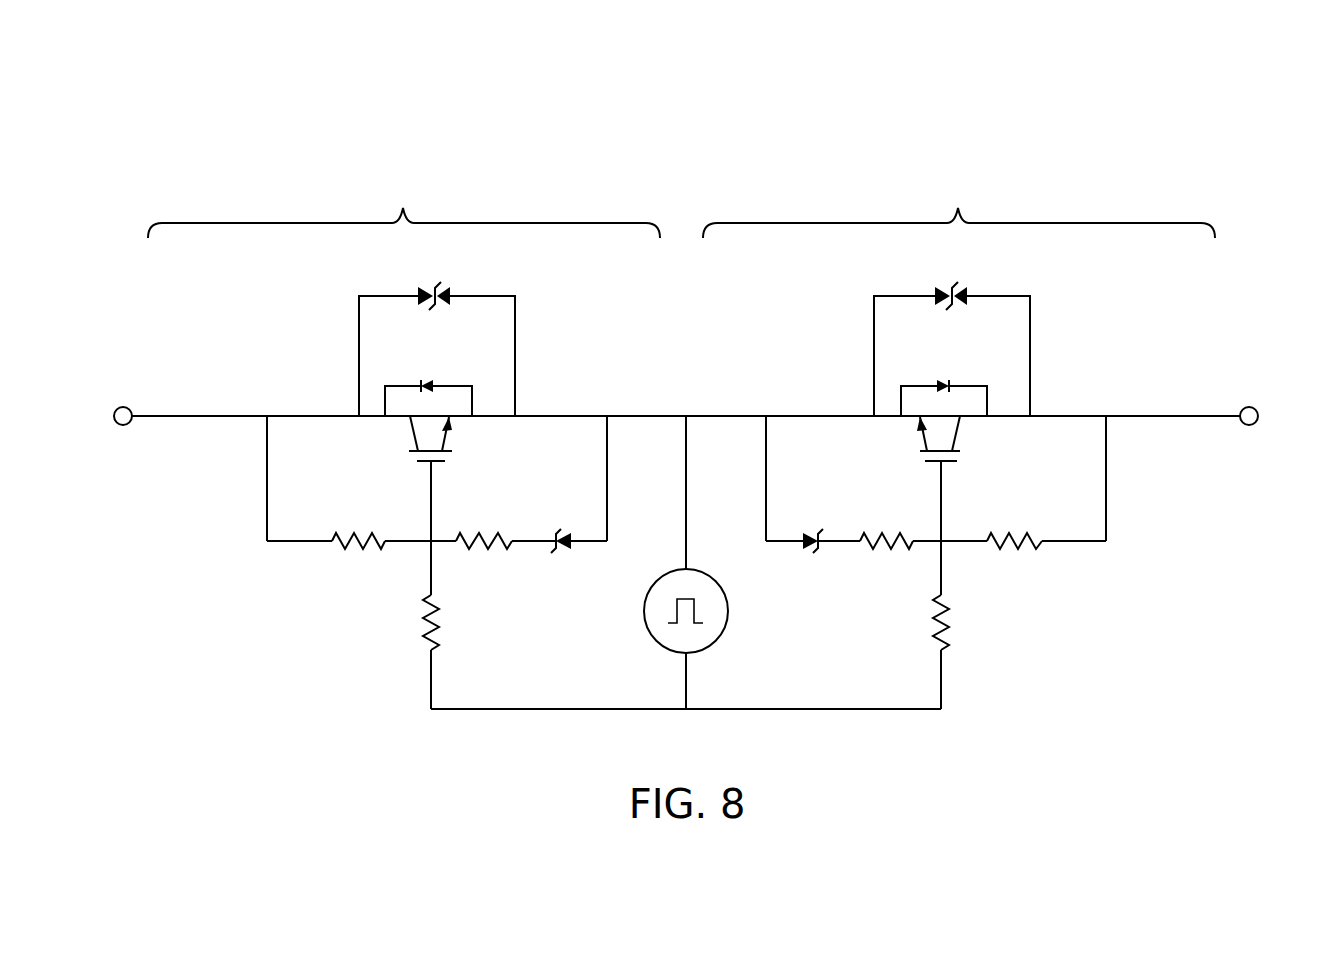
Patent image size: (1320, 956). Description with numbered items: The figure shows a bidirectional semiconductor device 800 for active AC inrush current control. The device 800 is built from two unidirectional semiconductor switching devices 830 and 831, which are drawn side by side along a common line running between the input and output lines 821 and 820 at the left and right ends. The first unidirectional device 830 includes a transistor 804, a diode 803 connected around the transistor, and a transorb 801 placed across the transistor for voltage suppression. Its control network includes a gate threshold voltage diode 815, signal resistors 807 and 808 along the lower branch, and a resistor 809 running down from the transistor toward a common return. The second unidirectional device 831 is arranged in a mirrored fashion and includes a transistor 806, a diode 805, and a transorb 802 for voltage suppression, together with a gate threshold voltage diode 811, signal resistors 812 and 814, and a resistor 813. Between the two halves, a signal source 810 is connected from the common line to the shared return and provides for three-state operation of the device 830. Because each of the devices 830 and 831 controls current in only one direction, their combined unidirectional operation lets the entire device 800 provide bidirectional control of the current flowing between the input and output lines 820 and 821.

The bidirectional semiconductor device 800 is at (1275, 117).
The transorb 801 is at (433, 287).
The transorb 802 is at (944, 287).
The diode 803 is at (430, 380).
The transistor 804 is at (443, 463).
The diode 805 is at (942, 380).
The transistor 806 is at (936, 463).
The signal resistor 807 is at (343, 550).
The signal resistor 808 is at (487, 550).
The resistor 809 is at (421, 629).
The signal source 810 is at (673, 569).
The gate threshold voltage diode 811 is at (822, 553).
The signal resistor 812 is at (885, 550).
The resistor 813 is at (951, 628).
The signal resistor 814 is at (1027, 550).
The gate threshold voltage diode 815 is at (554, 553).
The input and output line 820 is at (1248, 426).
The input and output line 821 is at (122, 426).
The unidirectional semiconductor switching device 830 is at (404, 207).
The unidirectional semiconductor switching device 831 is at (959, 208).